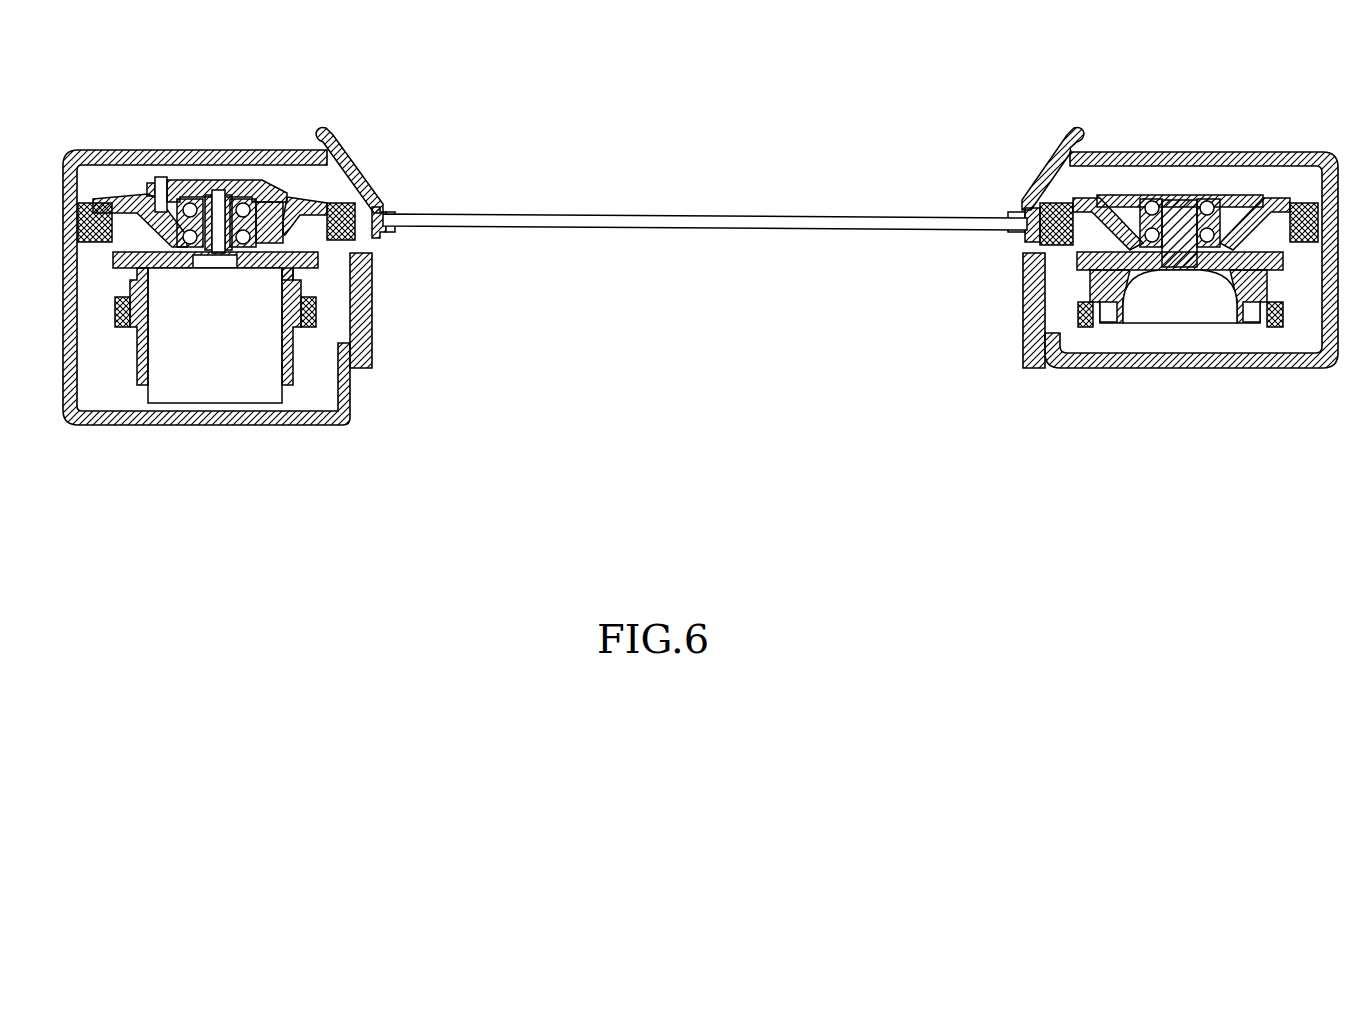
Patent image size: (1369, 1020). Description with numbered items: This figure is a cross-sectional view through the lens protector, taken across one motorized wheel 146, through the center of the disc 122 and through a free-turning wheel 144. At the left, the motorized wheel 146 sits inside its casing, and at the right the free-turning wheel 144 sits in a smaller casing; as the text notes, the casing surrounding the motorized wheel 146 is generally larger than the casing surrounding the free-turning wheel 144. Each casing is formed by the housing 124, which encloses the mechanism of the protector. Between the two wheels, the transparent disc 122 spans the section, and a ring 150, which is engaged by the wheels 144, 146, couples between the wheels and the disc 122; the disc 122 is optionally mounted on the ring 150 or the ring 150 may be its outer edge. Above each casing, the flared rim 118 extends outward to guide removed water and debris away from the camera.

The flared rim 118 is at (348, 184).
The disc 122 is at (580, 215).
The housing 124 is at (207, 152).
The free turning wheel 144 is at (1202, 387).
The motorized wheel 146 is at (202, 468).
The ring 150 is at (387, 212).